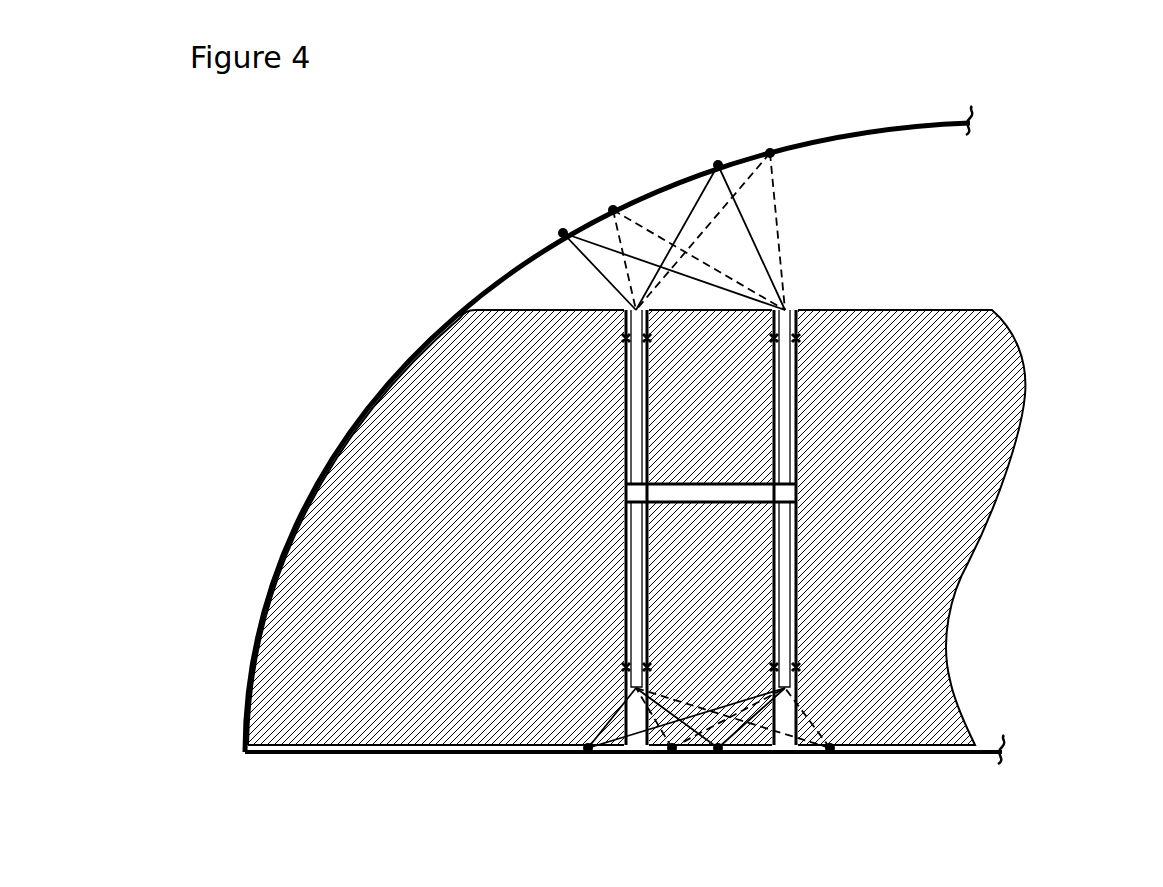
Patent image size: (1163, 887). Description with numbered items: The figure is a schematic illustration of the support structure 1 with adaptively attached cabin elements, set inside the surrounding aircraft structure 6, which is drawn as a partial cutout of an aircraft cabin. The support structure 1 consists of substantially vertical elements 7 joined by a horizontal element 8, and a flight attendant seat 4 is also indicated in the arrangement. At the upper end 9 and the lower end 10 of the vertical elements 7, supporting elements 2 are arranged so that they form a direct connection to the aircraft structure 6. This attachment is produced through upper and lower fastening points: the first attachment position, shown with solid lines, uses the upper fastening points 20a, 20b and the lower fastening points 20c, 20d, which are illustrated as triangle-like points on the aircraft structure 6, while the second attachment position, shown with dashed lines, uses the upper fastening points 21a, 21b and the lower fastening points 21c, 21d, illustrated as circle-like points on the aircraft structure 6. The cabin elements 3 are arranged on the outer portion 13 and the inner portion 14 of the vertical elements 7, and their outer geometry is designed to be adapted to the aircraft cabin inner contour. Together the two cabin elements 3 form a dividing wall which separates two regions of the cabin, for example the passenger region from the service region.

The support structure 1 is at (643, 423).
The supporting element 2 is at (819, 237).
The cabin element 3 is at (652, 203).
The flight attendant seat 4 is at (777, 508).
The aircraft structure 6 is at (326, 350).
The vertical element 7 is at (633, 527).
The horizontal element 8 is at (625, 490).
The upper end of the support structure 9 is at (623, 295).
The lower end of the support structure 10 is at (620, 683).
The outer portion of the vertical element 13 is at (773, 652).
The inner portion of the vertical element 14 is at (662, 492).
The upper first fastening point for the first attachment position 20a is at (563, 233).
The upper second fastening point for the first attachment position 20b is at (718, 165).
The lower first fastening point for the first attachment position 20c is at (588, 748).
The lower second fastening point for the first attachment position 20d is at (718, 748).
The upper first fastening point for the second attachment position 21a is at (613, 210).
The upper second fastening point for the second attachment position 21b is at (770, 153).
The lower first fastening point for the second attachment position 21c is at (672, 748).
The lower second fastening point for the second attachment position 21d is at (830, 748).